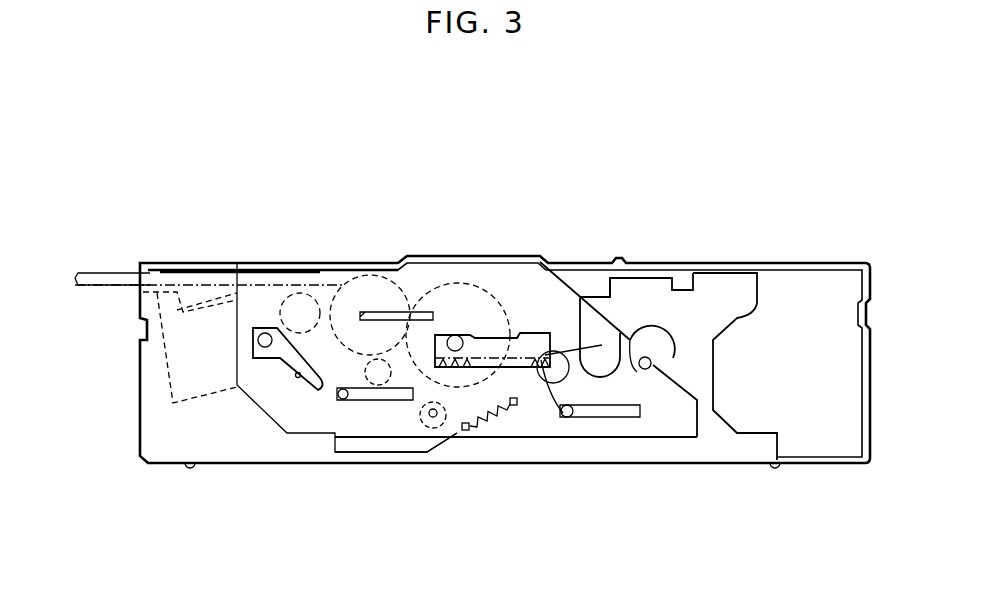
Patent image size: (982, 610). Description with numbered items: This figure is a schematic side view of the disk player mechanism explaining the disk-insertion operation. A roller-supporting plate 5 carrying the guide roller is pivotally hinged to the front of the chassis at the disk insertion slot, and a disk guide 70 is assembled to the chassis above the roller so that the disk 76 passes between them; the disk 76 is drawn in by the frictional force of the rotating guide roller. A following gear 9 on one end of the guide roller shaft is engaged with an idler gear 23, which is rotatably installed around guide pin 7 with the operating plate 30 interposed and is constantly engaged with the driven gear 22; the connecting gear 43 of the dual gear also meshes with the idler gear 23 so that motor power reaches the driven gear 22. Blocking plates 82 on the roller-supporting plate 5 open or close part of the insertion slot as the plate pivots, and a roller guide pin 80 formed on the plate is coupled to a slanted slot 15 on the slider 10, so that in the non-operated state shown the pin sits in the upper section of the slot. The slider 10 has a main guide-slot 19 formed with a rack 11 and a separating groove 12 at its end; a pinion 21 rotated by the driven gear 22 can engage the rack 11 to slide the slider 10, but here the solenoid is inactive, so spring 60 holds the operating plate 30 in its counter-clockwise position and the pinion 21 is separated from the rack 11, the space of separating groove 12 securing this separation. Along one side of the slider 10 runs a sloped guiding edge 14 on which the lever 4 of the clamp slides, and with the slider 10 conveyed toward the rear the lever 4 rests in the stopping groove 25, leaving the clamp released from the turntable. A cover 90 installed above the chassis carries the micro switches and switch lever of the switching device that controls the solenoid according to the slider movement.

The lever 4 is at (645, 370).
The roller-supporting plate 5 is at (163, 343).
The guide pin 7 is at (360, 310).
The following gear 9 is at (283, 290).
The slider 10 is at (667, 427).
The rack 11 is at (553, 413).
The separating groove 12 is at (448, 337).
The sloped guiding edge 14 is at (687, 287).
The slanted slot 15 is at (300, 372).
The main guide-slot 19 is at (550, 300).
The pinion 21 is at (458, 333).
The driven gear 22 is at (492, 302).
The idler gear 23 is at (327, 290).
The stopping groove 25 is at (636, 290).
The operating plate 30 is at (388, 455).
The connecting gear 43 is at (350, 390).
The spring 60 is at (500, 430).
The disk guide 70 is at (198, 265).
The disk 76 is at (90, 268).
The roller guide pin 80 is at (258, 340).
The blocking plate 82 is at (168, 283).
The cover 90 is at (805, 267).